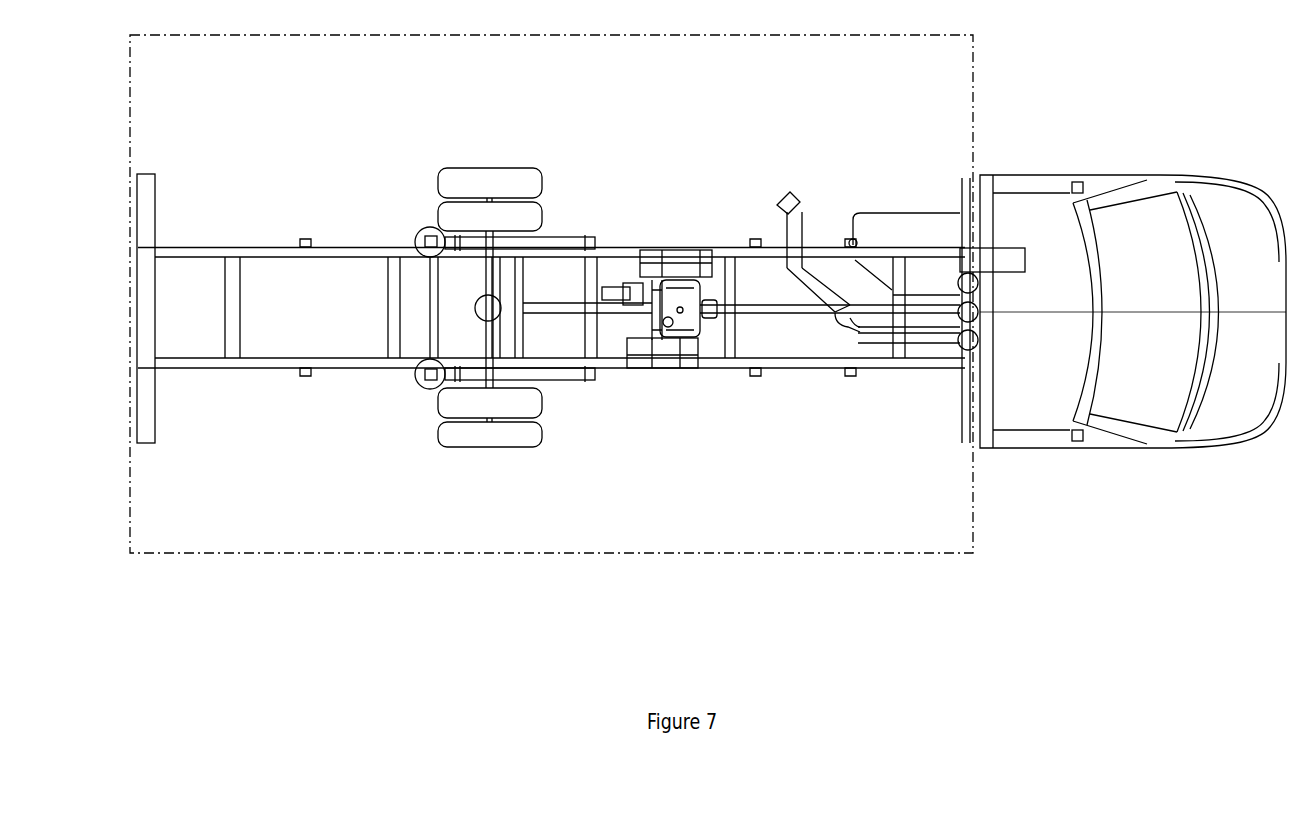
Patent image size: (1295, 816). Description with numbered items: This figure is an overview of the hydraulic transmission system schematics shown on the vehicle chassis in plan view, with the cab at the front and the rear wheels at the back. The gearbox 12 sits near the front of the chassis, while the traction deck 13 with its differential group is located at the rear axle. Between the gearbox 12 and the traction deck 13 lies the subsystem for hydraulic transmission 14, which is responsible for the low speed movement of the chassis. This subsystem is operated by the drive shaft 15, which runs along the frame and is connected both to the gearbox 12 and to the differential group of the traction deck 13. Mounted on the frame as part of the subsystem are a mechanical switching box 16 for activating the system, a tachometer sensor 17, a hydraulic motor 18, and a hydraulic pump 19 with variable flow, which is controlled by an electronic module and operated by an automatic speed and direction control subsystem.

The gearbox 12 is at (953, 293).
The traction deck 13 is at (488, 310).
The subsystem for hydraulic transmission 14 is at (927, 523).
The drive shaft 15 is at (760, 302).
The mechanical switching box 16 is at (683, 312).
The tachometer sensor 17 is at (640, 328).
The hydraulic motor 18 is at (633, 280).
The hydraulic pump 19 is at (650, 330).